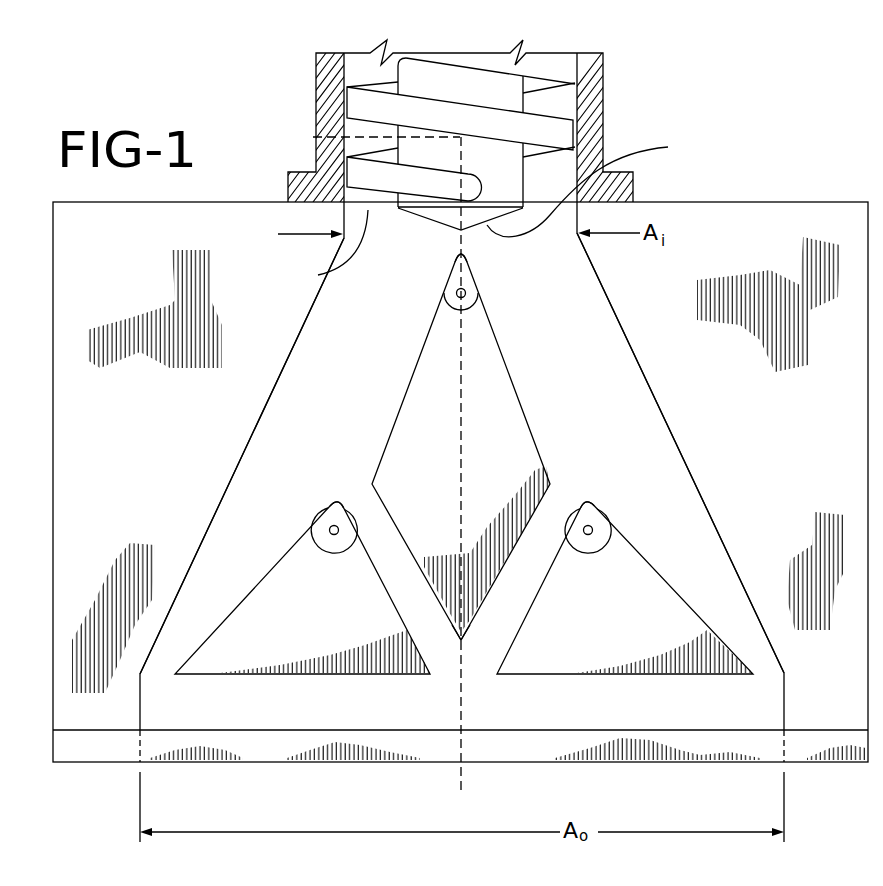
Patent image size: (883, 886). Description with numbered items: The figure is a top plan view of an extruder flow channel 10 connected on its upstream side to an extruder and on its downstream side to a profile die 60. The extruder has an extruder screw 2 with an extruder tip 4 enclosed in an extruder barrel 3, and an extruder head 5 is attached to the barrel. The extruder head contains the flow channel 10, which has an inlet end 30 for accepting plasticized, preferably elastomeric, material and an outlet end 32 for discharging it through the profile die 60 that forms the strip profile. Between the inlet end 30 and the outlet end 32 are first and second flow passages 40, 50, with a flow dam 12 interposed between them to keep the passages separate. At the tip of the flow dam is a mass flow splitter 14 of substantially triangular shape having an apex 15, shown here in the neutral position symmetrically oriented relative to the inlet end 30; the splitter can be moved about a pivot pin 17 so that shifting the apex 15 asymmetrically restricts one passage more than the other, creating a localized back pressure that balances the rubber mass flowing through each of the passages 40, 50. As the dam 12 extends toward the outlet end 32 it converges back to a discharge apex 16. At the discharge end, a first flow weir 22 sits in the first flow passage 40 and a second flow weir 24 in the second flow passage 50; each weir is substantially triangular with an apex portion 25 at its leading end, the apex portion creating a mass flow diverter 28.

The extruder screw 2 is at (313, 137).
The extruder barrel 3 is at (326, 86).
The extruder tip 4 is at (587, 186).
The extruder head 5 is at (776, 219).
The flow channel 10 is at (587, 346).
The flow dam 12 is at (424, 368).
The mass flow splitter 14 is at (478, 289).
The apex 15 is at (457, 255).
The discharge apex 16 is at (463, 640).
The pivot pin 17 is at (456, 297).
The first flow weir 22 is at (297, 622).
The second flow weir 24 is at (625, 622).
The apex portion 25 is at (336, 492).
The mass flow diverter 28 is at (323, 545).
The inlet end 30 is at (327, 267).
The outlet end 32 is at (270, 731).
The first flow passage 40 is at (307, 374).
The second flow passage 50 is at (638, 408).
The profile die 60 is at (78, 740).